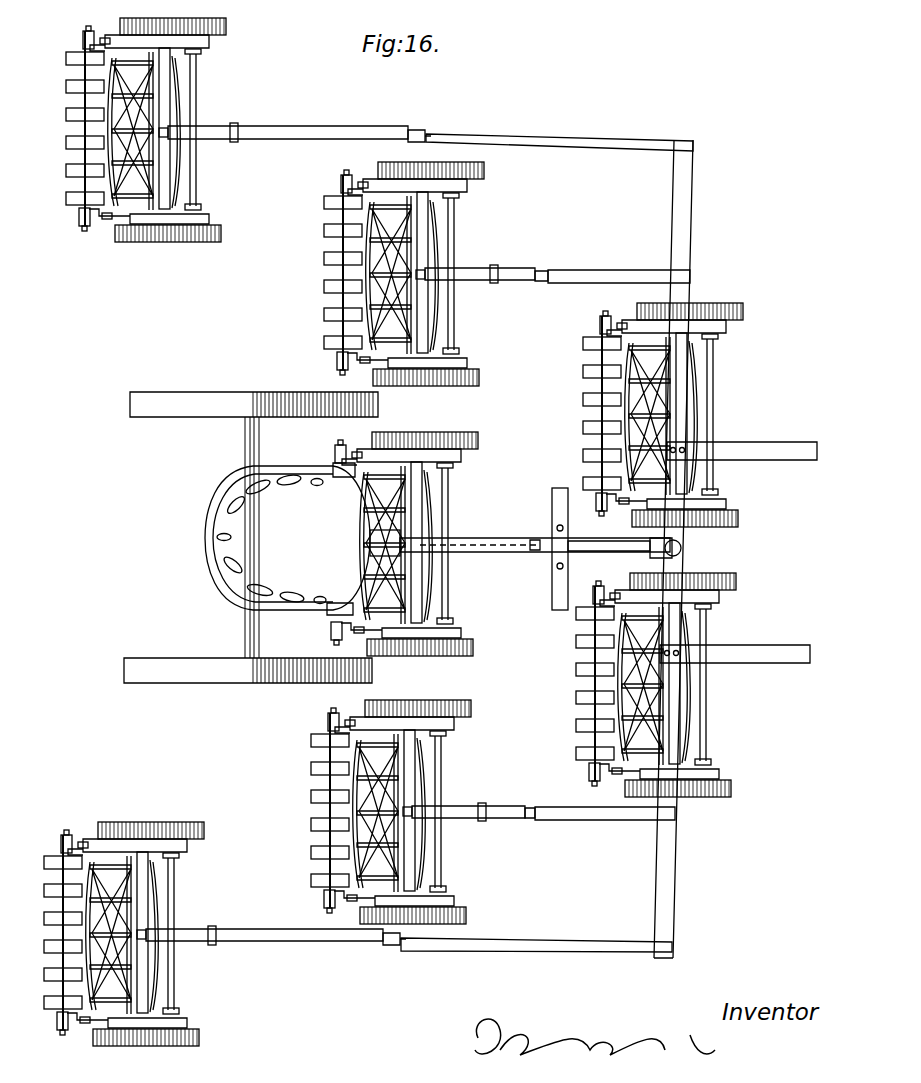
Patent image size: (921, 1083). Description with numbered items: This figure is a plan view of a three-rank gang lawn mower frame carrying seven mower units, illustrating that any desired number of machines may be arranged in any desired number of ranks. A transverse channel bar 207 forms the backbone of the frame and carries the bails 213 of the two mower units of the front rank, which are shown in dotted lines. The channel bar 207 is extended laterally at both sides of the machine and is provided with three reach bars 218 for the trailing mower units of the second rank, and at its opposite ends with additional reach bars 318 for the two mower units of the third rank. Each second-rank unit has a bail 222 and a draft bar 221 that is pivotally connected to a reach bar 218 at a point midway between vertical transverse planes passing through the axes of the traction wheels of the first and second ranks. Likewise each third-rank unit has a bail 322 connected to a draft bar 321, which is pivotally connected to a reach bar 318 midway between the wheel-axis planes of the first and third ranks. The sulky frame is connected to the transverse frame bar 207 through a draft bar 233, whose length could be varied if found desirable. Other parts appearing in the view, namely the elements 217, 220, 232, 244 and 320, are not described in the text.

The channel bar 207 is at (681, 235).
The bail 213 is at (682, 375).
The draft bar 217 is at (759, 445).
The reach bar 218 is at (583, 272).
The coupling 220 is at (546, 271).
The draft bar 221 is at (472, 281).
The bail 222 is at (422, 225).
The roller wheel 232 is at (204, 392).
The draft bar 233 is at (511, 552).
The hood 244 is at (210, 520).
The reach bar 318 is at (581, 140).
The coupling 320 is at (418, 131).
The draft bar 321 is at (245, 136).
The bail 322 is at (162, 92).